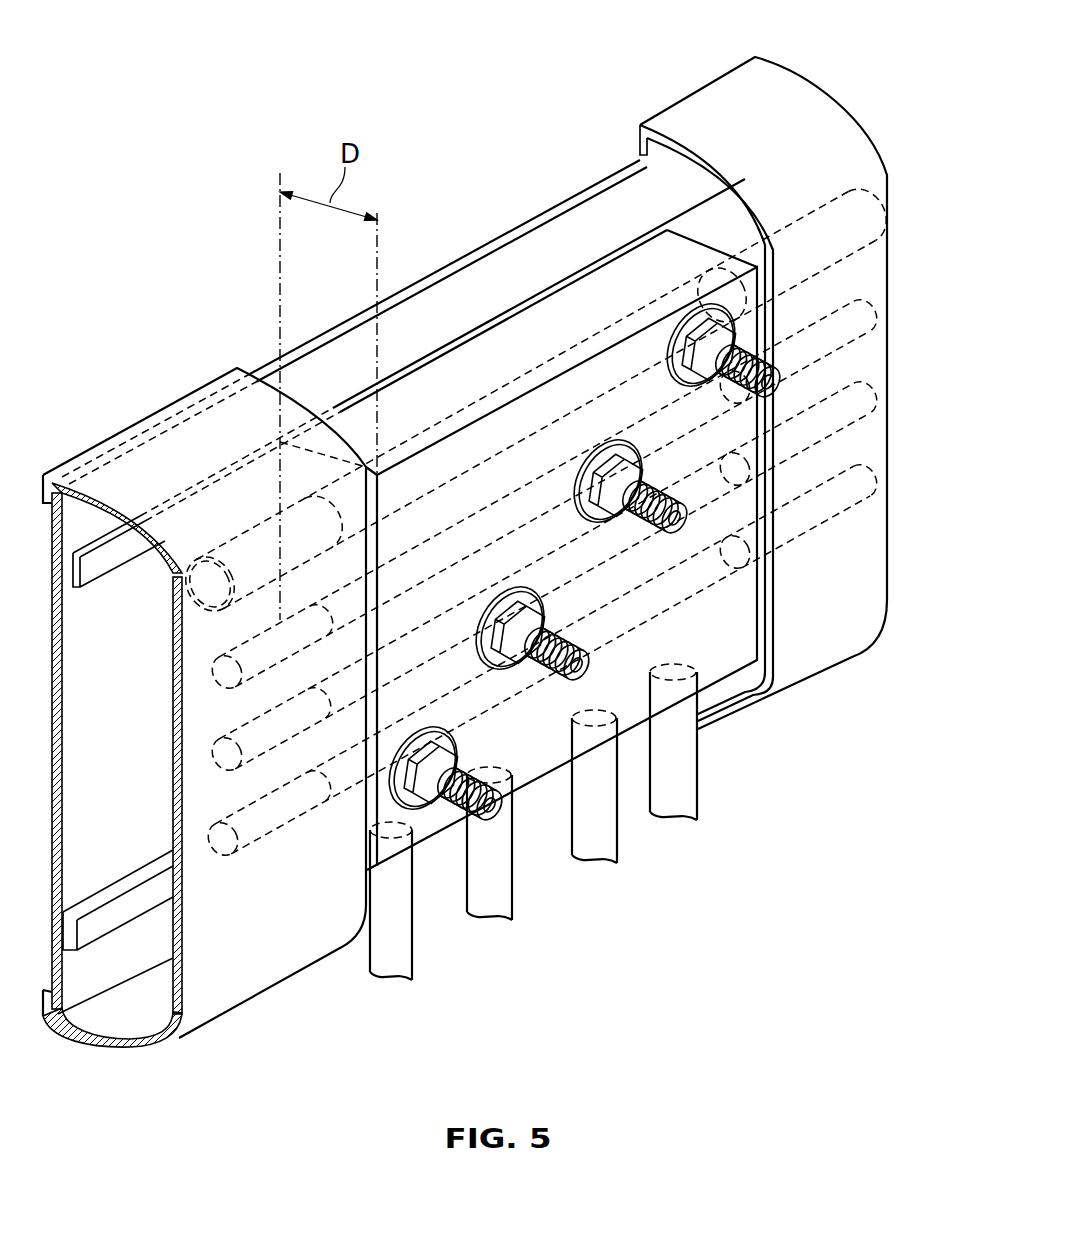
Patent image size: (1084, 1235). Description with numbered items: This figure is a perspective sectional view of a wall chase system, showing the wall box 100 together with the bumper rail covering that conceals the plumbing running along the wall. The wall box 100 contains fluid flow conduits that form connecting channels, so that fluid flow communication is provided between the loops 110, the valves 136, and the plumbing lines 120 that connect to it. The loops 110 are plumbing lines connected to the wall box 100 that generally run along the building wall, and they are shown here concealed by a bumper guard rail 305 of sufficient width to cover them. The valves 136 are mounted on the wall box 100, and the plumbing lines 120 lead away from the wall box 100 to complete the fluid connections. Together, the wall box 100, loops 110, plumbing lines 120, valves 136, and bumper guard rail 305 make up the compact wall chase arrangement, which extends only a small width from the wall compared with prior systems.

The wall box 100 is at (517, 205).
The loops 110 is at (844, 212).
The plumbing lines 120 is at (402, 953).
The valves 136 is at (771, 386).
The bumper guard rail 305 is at (217, 410).